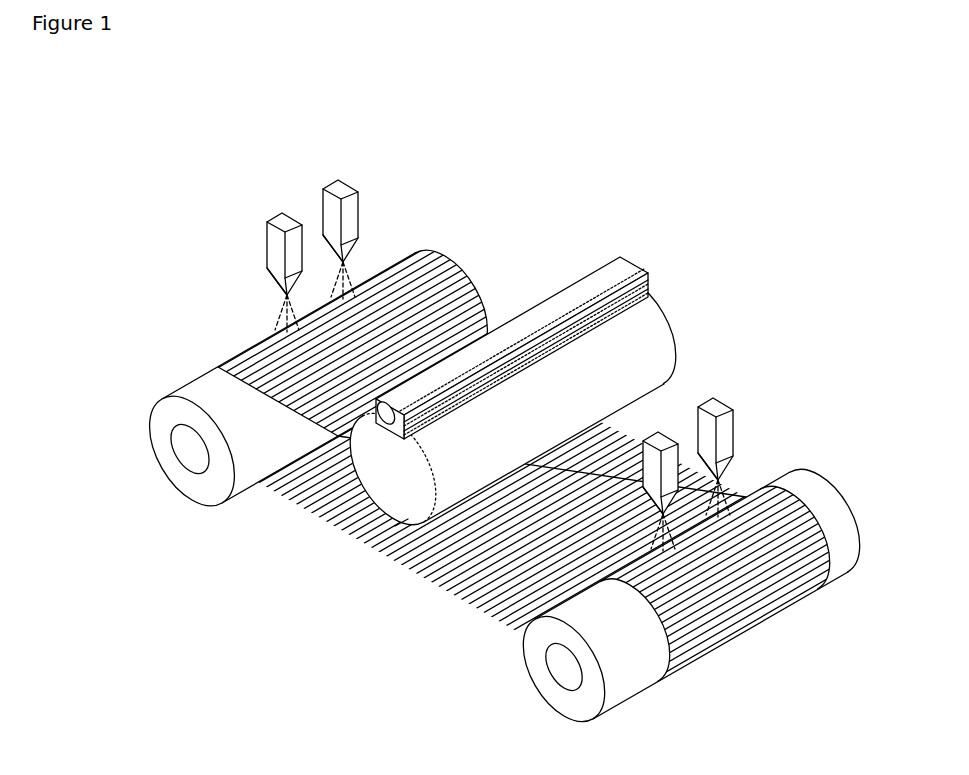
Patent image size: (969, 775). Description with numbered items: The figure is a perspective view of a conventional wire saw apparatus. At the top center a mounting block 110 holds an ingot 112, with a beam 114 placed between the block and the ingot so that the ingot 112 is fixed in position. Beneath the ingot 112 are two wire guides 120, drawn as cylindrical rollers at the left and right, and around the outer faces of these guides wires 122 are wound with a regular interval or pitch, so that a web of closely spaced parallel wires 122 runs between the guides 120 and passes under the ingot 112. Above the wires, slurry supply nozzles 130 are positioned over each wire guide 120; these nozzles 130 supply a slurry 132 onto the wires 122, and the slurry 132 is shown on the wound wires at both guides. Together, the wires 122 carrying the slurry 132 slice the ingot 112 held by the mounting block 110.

The mounting block 110 is at (570, 292).
The ingot 112 is at (367, 495).
The beam 114 is at (400, 528).
The wire guides 120 is at (155, 434).
The wires 122 is at (753, 613).
The slurry supply nozzles 130 is at (338, 180).
The slurry 132 is at (278, 327).